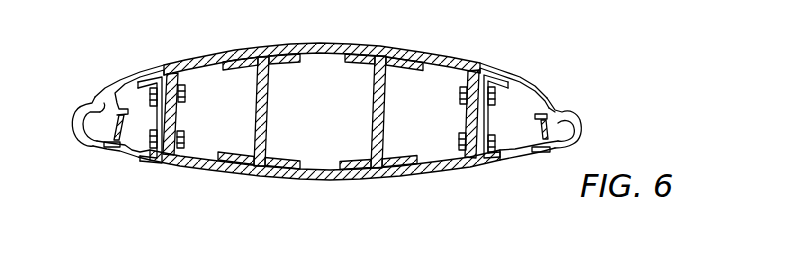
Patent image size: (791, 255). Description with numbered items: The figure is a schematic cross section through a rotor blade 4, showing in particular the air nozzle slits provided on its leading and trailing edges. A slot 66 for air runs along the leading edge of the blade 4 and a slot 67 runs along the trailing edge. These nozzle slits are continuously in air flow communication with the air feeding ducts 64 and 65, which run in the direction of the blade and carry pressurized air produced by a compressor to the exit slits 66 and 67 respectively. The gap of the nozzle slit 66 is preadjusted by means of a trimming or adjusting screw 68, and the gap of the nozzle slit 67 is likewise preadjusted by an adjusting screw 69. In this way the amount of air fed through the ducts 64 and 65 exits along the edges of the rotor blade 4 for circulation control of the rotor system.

The rotor blade 4 is at (216, 52).
The duct 64 is at (140, 150).
The duct 65 is at (513, 138).
The nozzle slit 66 is at (93, 146).
The nozzle slit 67 is at (552, 103).
The adjusting screw 68 is at (104, 150).
The adjusting screw 69 is at (545, 150).